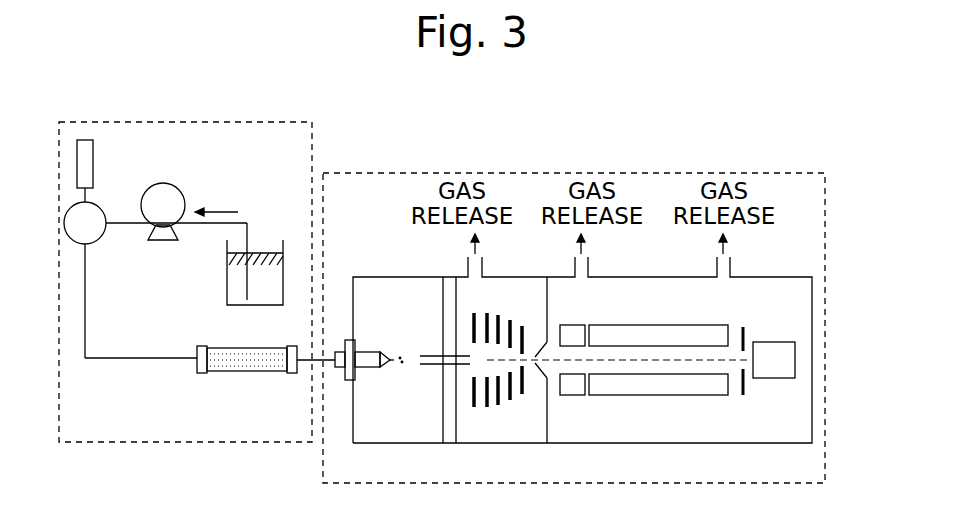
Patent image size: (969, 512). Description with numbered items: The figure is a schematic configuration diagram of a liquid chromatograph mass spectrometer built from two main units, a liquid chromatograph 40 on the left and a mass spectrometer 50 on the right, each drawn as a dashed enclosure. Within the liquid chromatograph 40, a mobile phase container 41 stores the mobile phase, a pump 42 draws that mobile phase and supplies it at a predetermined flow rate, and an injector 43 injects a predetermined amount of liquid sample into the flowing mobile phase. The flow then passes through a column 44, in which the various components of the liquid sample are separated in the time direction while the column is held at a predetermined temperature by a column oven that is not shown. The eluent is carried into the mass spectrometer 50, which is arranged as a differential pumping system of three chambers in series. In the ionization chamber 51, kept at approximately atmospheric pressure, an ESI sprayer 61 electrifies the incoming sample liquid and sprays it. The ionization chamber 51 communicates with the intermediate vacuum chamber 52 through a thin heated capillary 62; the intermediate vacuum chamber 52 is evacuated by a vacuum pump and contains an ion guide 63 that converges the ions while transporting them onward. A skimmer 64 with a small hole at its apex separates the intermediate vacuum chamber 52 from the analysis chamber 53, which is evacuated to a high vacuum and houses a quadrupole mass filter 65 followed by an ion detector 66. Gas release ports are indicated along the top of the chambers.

The liquid chromatograph 40 is at (262, 121).
The mobile phase container 41 is at (227, 290).
The pump 42 is at (165, 242).
The injector 43 is at (104, 238).
The column 44 is at (224, 375).
The mass spectrometer 50 is at (650, 172).
The ionization chamber 51 is at (412, 430).
The intermediate vacuum chamber 52 is at (490, 428).
The analysis chamber 53 is at (581, 428).
The ESI sprayer 61 is at (360, 370).
The heated capillary 62 is at (438, 354).
The ion guide 63 is at (505, 315).
The skimmer 64 is at (543, 368).
The quadrupole mass filter 65 is at (655, 323).
The ion detector 66 is at (777, 340).